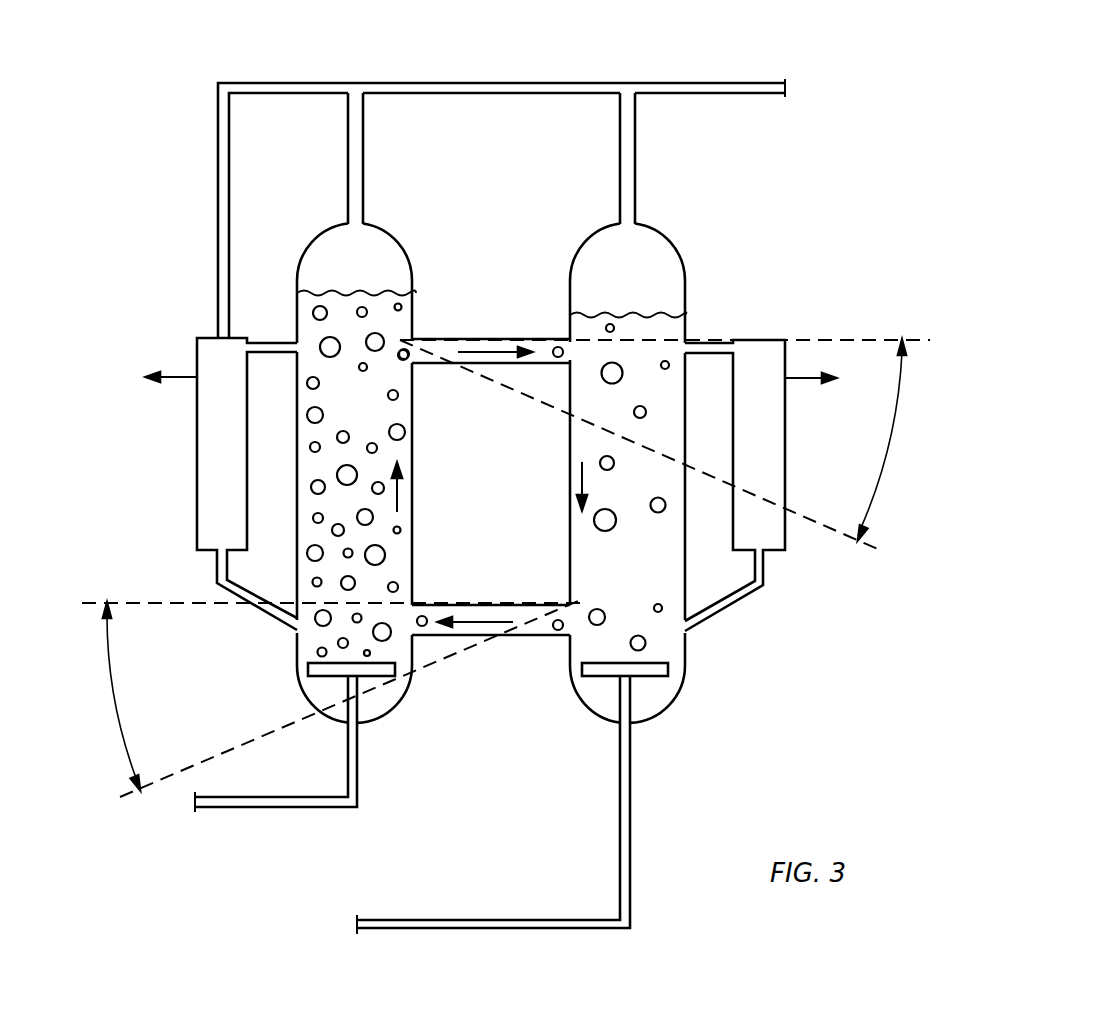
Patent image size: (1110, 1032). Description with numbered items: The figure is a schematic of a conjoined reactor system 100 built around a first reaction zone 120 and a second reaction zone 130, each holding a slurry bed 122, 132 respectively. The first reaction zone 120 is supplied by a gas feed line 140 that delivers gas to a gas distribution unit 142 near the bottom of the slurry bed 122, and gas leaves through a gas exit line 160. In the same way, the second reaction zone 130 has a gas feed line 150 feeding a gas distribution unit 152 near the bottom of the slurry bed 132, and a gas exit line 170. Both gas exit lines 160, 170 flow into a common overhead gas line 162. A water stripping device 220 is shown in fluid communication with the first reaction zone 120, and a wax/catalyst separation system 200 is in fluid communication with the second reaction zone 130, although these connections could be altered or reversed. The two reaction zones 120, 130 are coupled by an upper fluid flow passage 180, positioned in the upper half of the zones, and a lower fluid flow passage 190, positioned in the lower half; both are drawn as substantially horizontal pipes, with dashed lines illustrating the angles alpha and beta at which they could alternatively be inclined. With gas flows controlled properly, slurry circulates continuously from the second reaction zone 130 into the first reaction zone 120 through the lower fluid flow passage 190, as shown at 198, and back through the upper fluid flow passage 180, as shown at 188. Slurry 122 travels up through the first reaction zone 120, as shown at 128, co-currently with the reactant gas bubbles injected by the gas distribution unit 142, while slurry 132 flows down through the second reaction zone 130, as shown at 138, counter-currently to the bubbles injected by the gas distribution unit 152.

The reactor system 100 is at (762, 188).
The first reaction zone 120 is at (397, 237).
The slurry bed 122 is at (330, 418).
The upward slurry flow 128 is at (400, 498).
The second reaction zone 130 is at (672, 237).
The slurry bed 132 is at (603, 576).
The downward slurry flow 138 is at (577, 472).
The gas feed line 140 is at (275, 810).
The gas distribution unit 142 is at (390, 683).
The gas feed line 150 is at (492, 930).
The gas distribution unit 152 is at (665, 683).
The gas exit line 160 is at (365, 162).
The overhead gas line 162 is at (486, 82).
The gas exit line 170 is at (637, 162).
The upper fluid flow passage 180 is at (512, 338).
The slurry flow through upper passage 188 is at (472, 346).
The lower fluid flow passage 190 is at (494, 605).
The slurry flow through lower passage 198 is at (470, 630).
The wax/catalyst separation system 200 is at (787, 446).
The water stripping device 220 is at (197, 442).